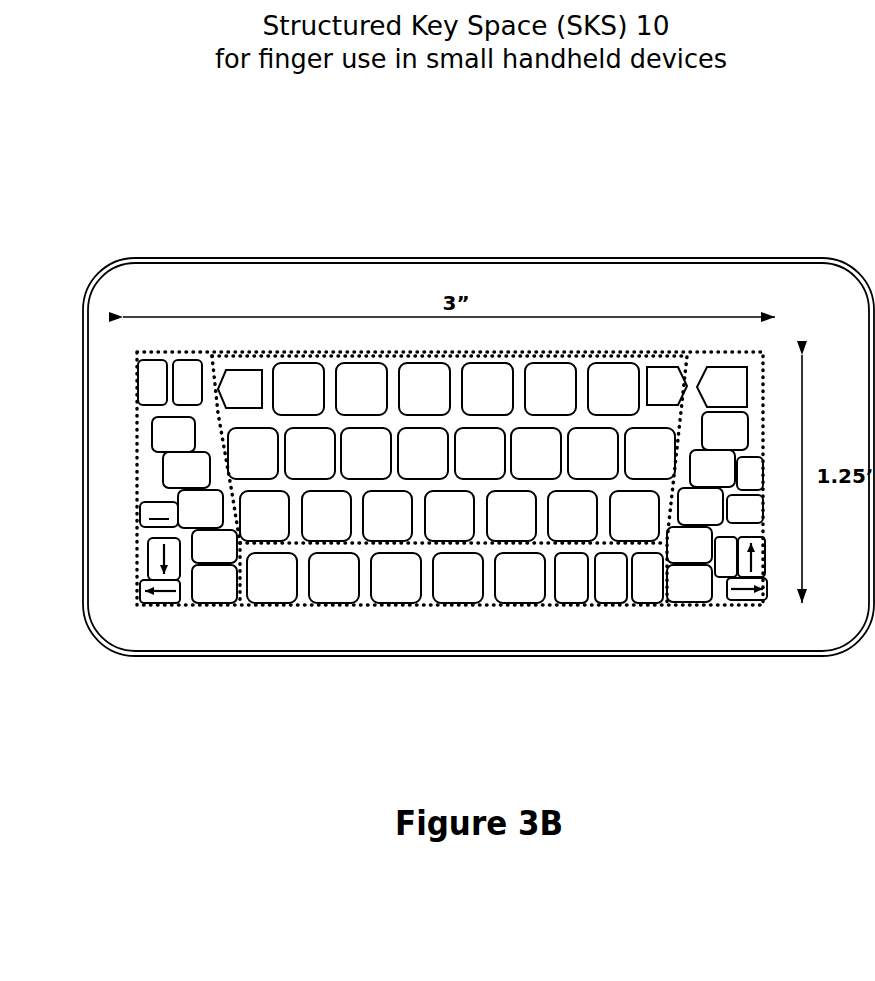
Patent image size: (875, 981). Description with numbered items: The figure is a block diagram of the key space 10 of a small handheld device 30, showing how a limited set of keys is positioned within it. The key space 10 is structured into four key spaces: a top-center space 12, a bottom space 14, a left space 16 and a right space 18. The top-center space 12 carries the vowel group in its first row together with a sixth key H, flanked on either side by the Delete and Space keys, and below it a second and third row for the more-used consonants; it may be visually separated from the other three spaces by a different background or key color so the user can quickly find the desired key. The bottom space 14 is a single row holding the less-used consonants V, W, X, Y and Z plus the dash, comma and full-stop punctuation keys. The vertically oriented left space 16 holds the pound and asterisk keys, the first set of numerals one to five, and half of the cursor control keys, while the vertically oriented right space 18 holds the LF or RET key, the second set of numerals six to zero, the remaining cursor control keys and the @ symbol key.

The key space 10 is at (138, 508).
The top-center space 12 is at (663, 352).
The bottom space 14 is at (615, 607).
The left space 16 is at (148, 477).
The right space 18 is at (753, 407).
The device 30 is at (283, 260).